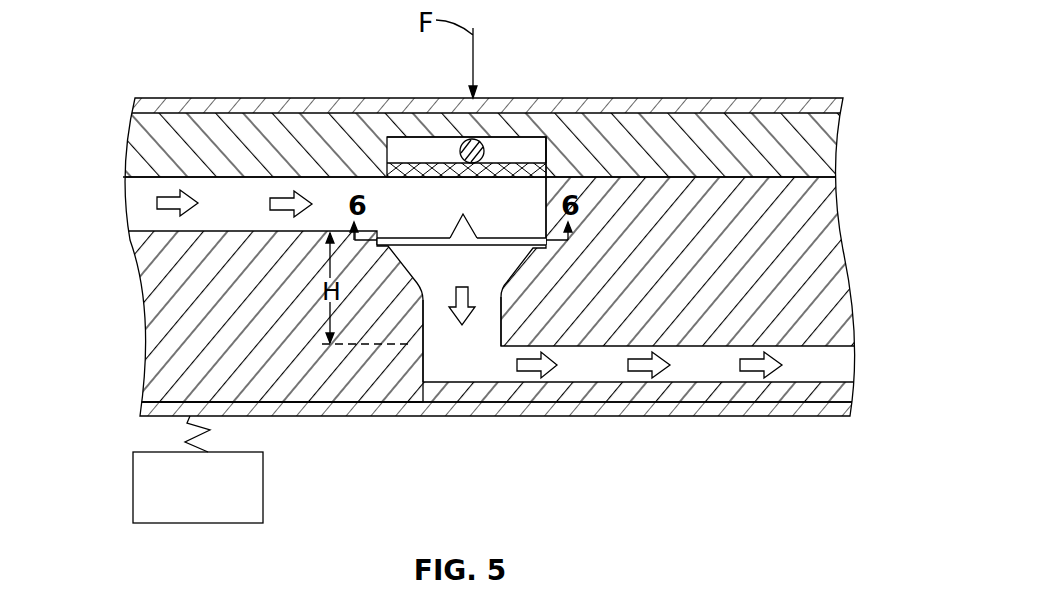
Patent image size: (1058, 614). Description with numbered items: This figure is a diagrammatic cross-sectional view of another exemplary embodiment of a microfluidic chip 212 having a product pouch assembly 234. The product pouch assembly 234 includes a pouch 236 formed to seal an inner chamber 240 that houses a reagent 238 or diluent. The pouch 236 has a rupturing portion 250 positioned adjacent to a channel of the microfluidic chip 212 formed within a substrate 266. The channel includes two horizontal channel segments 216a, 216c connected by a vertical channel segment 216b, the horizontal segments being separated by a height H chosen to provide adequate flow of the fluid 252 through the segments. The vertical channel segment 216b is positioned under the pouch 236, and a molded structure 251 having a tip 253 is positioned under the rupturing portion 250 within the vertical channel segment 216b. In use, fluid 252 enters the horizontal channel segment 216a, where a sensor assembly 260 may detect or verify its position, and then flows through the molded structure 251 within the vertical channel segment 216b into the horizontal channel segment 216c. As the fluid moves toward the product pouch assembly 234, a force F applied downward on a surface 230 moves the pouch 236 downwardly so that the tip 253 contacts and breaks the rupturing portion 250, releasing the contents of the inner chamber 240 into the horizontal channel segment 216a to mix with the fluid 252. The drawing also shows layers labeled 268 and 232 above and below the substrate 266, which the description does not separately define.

The microfluidic chip 212 is at (130, 35).
The surface 230 is at (845, 108).
The middle layer 268 is at (828, 146).
The pouch 236 is at (403, 137).
The rupturing portion 250 is at (387, 172).
The product pouch assembly 234 is at (552, 150).
The reagent 238 is at (478, 140).
The inner chamber 240 is at (546, 138).
The substrate 266 is at (837, 262).
The bottom layer 232 is at (847, 410).
The fluid 252 is at (157, 203).
The horizontal channel segment 216a is at (205, 215).
The structure 251 is at (388, 237).
The tip 253 is at (468, 224).
The vertical channel segment 216b is at (448, 327).
The horizontal channel segment 216c is at (602, 364).
The sensor assembly 260 is at (265, 488).